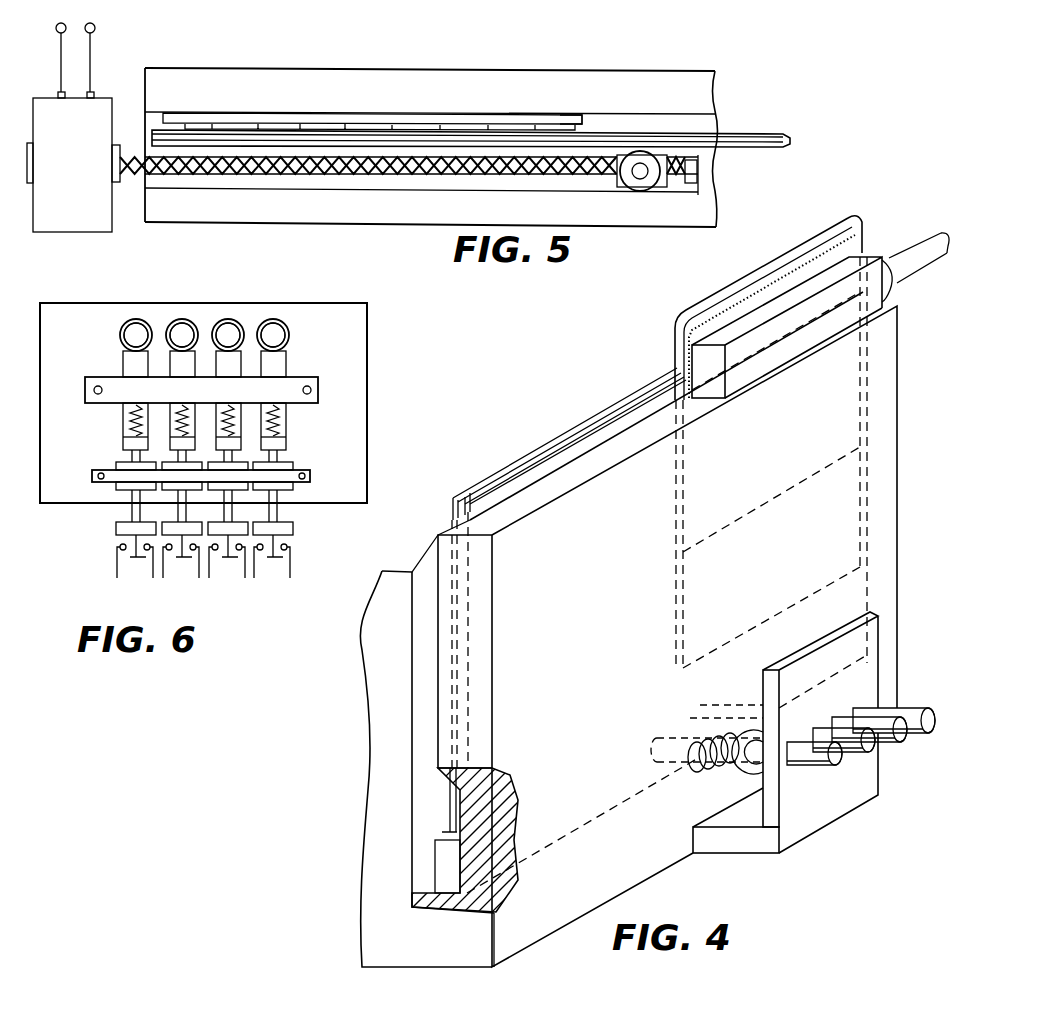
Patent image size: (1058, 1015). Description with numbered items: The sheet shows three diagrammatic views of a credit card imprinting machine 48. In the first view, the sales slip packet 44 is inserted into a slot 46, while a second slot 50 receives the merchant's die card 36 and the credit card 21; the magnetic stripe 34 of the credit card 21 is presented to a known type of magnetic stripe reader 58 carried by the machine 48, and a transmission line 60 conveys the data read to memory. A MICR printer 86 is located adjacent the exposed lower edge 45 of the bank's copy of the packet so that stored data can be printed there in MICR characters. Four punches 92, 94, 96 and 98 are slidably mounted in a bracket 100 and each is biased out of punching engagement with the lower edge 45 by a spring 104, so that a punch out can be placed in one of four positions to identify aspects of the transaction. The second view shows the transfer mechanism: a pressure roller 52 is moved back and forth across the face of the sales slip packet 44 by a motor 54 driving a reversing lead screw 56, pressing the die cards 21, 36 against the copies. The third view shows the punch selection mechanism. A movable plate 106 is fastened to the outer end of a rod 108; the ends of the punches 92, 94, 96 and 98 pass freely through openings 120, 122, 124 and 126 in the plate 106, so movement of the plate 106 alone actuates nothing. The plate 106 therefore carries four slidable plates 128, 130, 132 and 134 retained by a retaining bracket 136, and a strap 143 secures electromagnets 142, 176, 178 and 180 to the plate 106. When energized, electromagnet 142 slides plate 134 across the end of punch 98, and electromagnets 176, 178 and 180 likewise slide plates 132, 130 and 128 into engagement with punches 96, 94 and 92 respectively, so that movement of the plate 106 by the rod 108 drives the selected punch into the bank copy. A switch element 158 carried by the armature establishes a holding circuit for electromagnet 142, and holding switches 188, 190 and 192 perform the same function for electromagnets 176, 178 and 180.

In FIG. 5, the credit card 21 is at (466, 117).
In FIG. 4, the credit card 21 is at (744, 462).
In FIG. 4, the magnetic stripe 34 is at (676, 356).
In FIG. 5, the merchant's die card 36 is at (380, 127).
In FIG. 4, the merchant's die card 36 is at (745, 482).
In FIG. 5, the sales slip packet 44 is at (740, 135).
In FIG. 4, the sales slip packet 44 is at (507, 464).
In FIG. 4, the lower edge of the bank copy 45 is at (458, 875).
In FIG. 4, the slot 46 is at (427, 577).
In FIG. 5, the machine 48 is at (571, 66).
In FIG. 4, the machine 48 is at (902, 378).
In FIG. 5, the slot 50 is at (586, 124).
In FIG. 4, the slot 50 is at (680, 408).
In FIG. 5, the pressure roller 52 is at (645, 188).
In FIG. 5, the motor 54 is at (87, 232).
In FIG. 5, the reversing lead screw 56 is at (243, 213).
In FIG. 4, the magnetic stripe reader 58 is at (863, 262).
In FIG. 4, the transmission line 60 is at (918, 247).
In FIG. 4, the MICR printer 86 is at (435, 862).
In FIG. 6, the punch 92 is at (277, 330).
In FIG. 4, the punch 92 is at (928, 736).
In FIG. 6, the punch 94 is at (229, 330).
In FIG. 4, the punch 94 is at (896, 746).
In FIG. 6, the punch 96 is at (184, 334).
In FIG. 4, the punch 96 is at (866, 757).
In FIG. 6, the punch 98 is at (135, 326).
In FIG. 4, the punch 98 is at (838, 770).
In FIG. 4, the bracket 100 is at (775, 813).
In FIG. 4, the spring 104 is at (712, 766).
In FIG. 6, the movable plate 106 is at (53, 503).
In FIG. 6, the rod 108 is at (205, 437).
In FIG. 6, the opening 120 is at (292, 344).
In FIG. 6, the opening 122 is at (243, 340).
In FIG. 6, the opening 124 is at (180, 323).
In FIG. 6, the opening 126 is at (120, 338).
In FIG. 6, the slidable plate 128 is at (285, 373).
In FIG. 6, the slidable plate 130 is at (218, 364).
In FIG. 6, the slidable plate 132 is at (167, 367).
In FIG. 6, the slidable plate 134 is at (123, 363).
In FIG. 6, the retaining bracket 136 is at (308, 405).
In FIG. 6, the electromagnet 142 is at (120, 465).
In FIG. 6, the strap 143 is at (118, 477).
In FIG. 6, the switch element 158 is at (140, 557).
In FIG. 6, the electromagnet 176 is at (168, 487).
In FIG. 6, the electromagnet 178 is at (247, 488).
In FIG. 6, the electromagnet 180 is at (290, 490).
In FIG. 6, the holding switch 188 is at (185, 557).
In FIG. 6, the holding switch 190 is at (230, 557).
In FIG. 6, the holding switch 192 is at (275, 557).